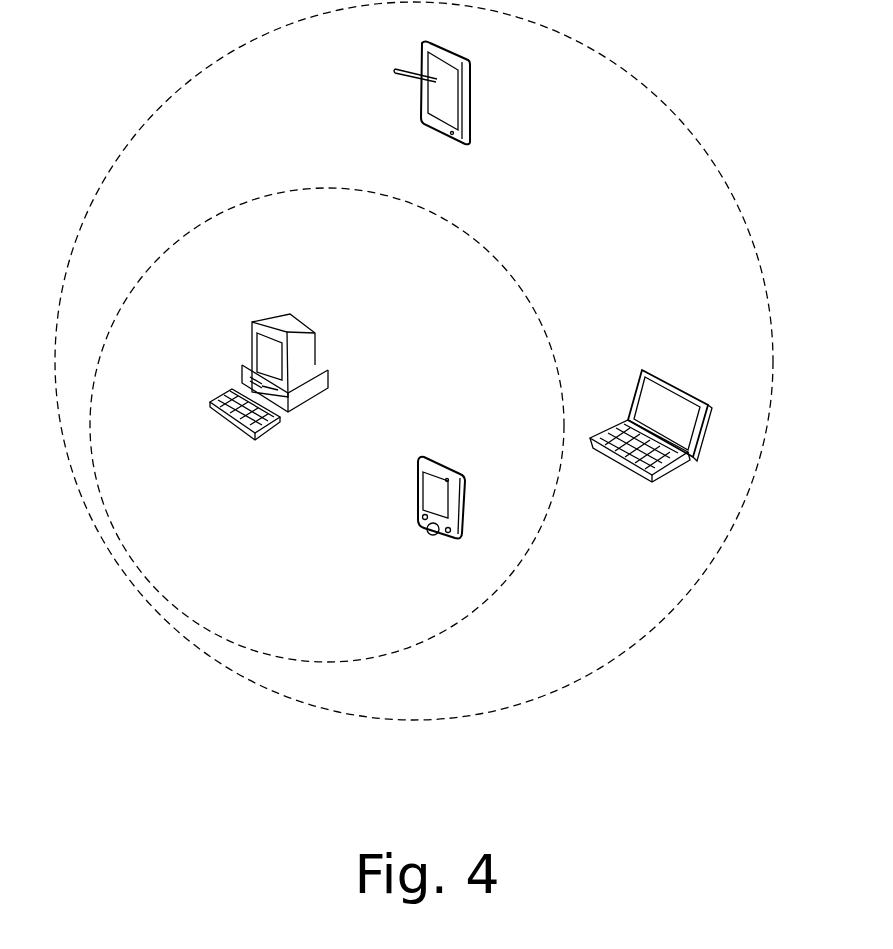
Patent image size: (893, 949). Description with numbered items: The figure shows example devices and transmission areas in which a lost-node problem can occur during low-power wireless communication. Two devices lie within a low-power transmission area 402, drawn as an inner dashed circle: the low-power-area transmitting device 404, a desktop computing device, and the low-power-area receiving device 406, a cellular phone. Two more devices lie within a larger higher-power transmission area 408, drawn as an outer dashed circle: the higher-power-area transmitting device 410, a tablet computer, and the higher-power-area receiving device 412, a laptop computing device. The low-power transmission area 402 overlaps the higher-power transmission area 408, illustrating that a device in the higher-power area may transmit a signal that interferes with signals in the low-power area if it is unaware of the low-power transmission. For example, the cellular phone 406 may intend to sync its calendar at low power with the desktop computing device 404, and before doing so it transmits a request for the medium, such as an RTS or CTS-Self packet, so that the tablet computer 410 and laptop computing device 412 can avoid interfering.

The low-power transmission area 402 is at (243, 202).
The low-power-area transmitting device 404 is at (312, 333).
The low-power-area receiving device 406 is at (465, 477).
The higher-power transmission area 408 is at (654, 96).
The higher-power-area transmitting device 410 is at (470, 63).
The higher-power-area receiving device 412 is at (693, 400).